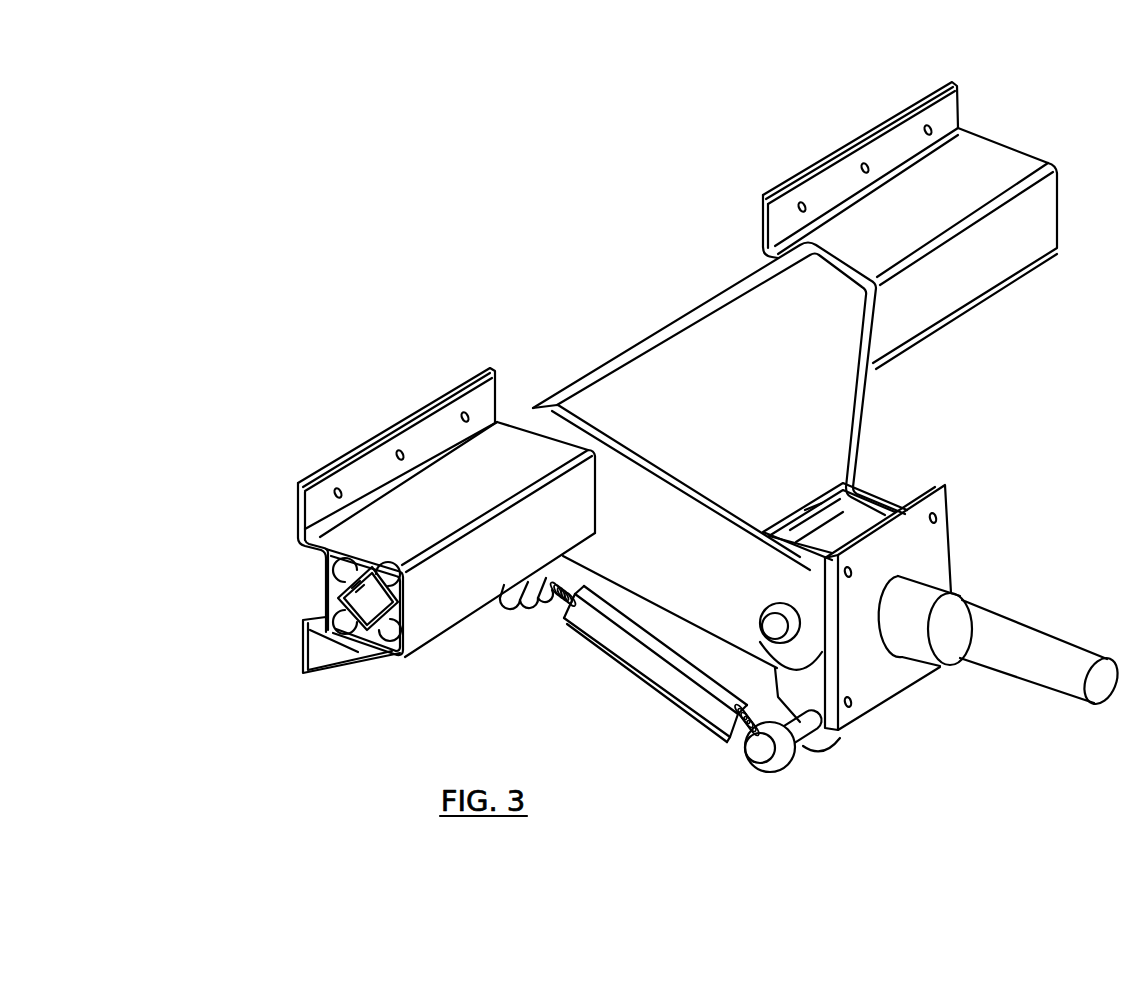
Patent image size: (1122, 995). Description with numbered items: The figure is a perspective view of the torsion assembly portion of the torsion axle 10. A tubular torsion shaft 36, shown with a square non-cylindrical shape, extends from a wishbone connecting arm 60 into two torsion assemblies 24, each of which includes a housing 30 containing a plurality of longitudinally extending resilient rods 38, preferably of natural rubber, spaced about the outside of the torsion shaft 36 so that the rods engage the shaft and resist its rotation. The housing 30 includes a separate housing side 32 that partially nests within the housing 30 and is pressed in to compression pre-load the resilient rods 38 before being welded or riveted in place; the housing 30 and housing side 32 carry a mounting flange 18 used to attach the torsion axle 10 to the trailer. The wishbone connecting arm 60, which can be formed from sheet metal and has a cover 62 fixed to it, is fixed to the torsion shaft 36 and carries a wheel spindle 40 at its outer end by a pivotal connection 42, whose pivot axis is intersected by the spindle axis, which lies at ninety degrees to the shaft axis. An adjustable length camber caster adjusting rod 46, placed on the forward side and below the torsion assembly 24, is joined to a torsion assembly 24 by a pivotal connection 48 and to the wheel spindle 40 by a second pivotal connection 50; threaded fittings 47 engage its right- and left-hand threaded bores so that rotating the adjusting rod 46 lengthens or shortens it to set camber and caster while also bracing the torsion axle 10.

The torsion axle 10 is at (468, 169).
The mounting flange 18 is at (521, 364).
The torsion assembly 24 is at (318, 396).
The housing 30 is at (432, 618).
The housing side 32 is at (323, 592).
The torsion shaft 36 is at (367, 648).
The resilient rods 38 is at (342, 570).
The wheel spindle 40 is at (1038, 656).
The pivotal connection 42 is at (773, 630).
The adjustable length camber caster adjusting rod 46 is at (656, 668).
The threaded fittings 47 is at (553, 606).
The pivotal connection 48 is at (519, 641).
The second pivotal connection 50 is at (812, 768).
The wishbone connecting arm 60 is at (655, 567).
The cover 62 is at (807, 398).